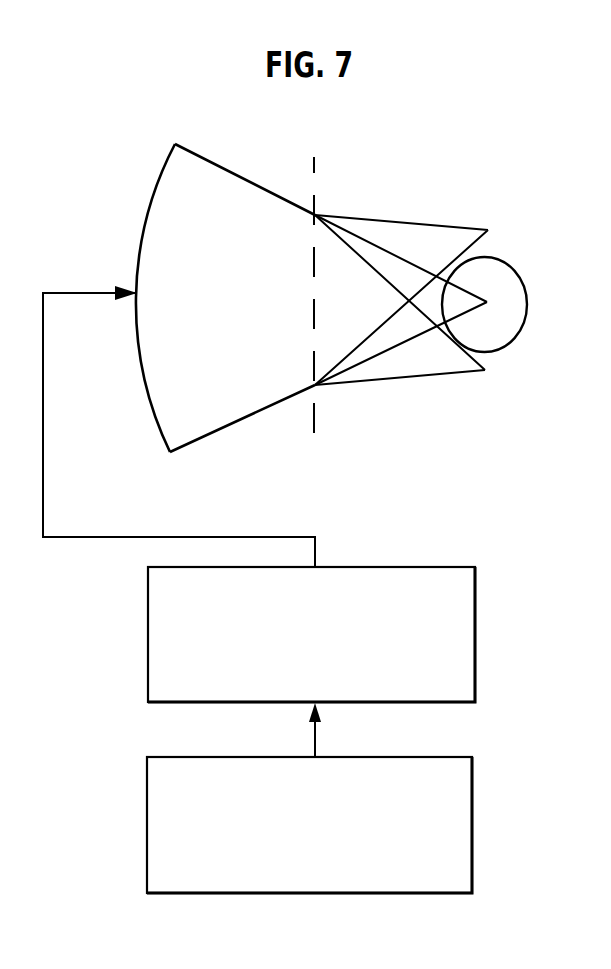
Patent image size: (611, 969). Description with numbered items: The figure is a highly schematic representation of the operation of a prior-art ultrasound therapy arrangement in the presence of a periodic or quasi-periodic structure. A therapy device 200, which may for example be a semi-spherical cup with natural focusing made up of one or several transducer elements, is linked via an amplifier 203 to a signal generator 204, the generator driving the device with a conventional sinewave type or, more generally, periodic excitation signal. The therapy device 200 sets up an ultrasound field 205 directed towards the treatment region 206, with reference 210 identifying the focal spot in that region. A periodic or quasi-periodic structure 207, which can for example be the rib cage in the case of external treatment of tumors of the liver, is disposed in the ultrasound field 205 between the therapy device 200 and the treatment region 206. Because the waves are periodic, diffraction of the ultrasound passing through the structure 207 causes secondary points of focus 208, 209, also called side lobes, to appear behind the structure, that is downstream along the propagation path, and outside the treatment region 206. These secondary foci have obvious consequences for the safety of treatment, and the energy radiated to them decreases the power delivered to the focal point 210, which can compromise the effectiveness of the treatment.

The therapy device 200 is at (140, 371).
The amplifier 203 is at (337, 660).
The signal generator 204 is at (337, 850).
The ultrasound field 205 is at (245, 190).
The treatment region 206 is at (520, 328).
The periodic or quasi-periodic structure 207 is at (314, 430).
The secondary point of focus 208 is at (488, 229).
The secondary point of focus 209 is at (486, 372).
The focal spot 210 is at (490, 298).